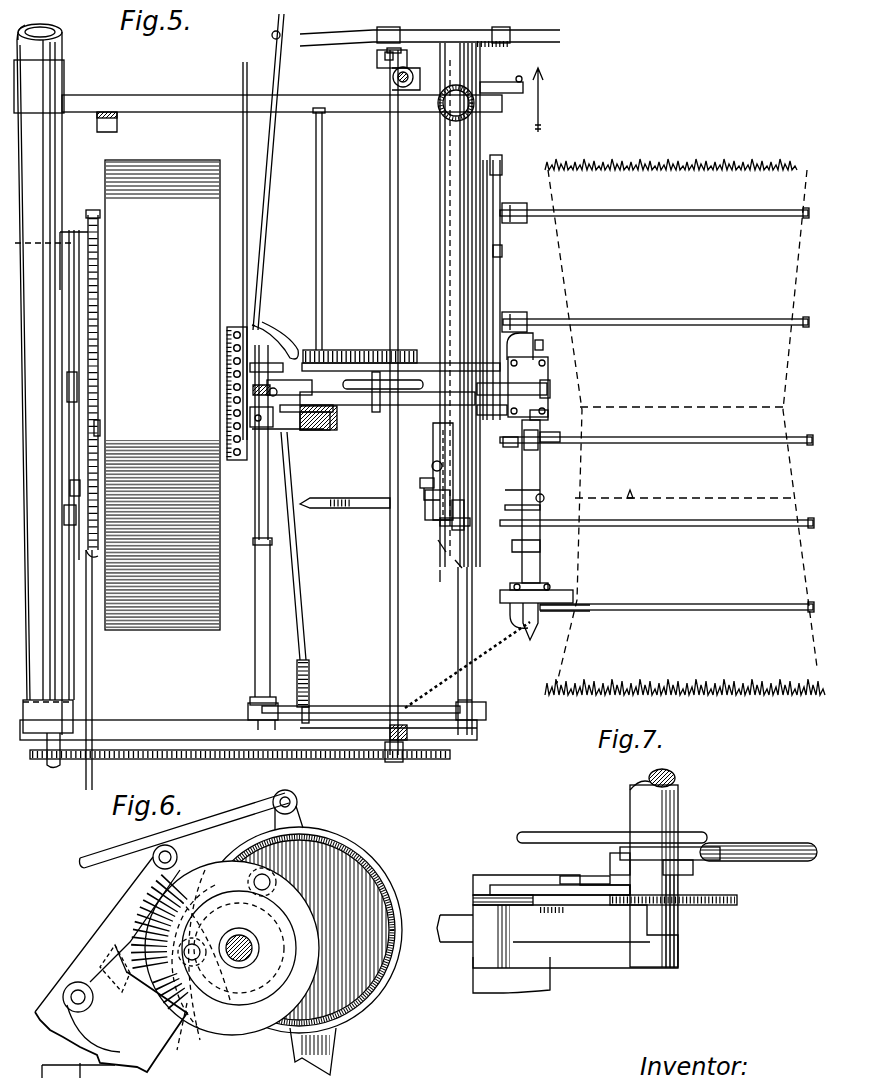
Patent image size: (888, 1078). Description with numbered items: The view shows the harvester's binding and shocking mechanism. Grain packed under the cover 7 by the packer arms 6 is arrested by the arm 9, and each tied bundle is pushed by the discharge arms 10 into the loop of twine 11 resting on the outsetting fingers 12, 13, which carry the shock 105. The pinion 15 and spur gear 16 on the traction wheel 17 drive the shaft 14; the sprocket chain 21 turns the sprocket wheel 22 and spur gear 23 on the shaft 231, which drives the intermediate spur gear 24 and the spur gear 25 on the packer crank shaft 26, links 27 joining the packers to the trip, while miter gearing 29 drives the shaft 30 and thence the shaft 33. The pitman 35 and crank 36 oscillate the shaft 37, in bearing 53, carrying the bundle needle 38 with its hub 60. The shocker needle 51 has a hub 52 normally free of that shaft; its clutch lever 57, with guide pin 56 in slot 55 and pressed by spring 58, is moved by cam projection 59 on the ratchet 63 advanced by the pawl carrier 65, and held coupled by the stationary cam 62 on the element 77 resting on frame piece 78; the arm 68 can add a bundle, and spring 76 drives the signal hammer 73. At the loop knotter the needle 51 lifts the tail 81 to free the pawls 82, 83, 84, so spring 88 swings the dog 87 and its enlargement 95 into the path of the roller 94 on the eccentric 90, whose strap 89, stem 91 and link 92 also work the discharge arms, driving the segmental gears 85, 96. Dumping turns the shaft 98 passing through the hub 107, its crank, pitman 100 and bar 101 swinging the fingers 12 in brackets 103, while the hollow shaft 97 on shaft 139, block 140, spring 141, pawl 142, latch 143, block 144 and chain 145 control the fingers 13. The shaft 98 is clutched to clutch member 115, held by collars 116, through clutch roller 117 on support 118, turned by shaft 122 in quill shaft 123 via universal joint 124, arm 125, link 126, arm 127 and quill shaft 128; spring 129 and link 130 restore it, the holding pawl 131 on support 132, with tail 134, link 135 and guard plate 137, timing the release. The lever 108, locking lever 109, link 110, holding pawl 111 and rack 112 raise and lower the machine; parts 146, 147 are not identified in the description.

In FIG. 5, the packer arms 6 is at (412, 383).
In FIG. 5, the cover 7 is at (150, 100).
In FIG. 5, the arm 9 is at (547, 400).
In FIG. 6, the discharge arms 10 is at (330, 1056).
In FIG. 5, the loop of twine or string 11 is at (710, 497).
In FIG. 5, the fingers 12 is at (672, 210).
In FIG. 5, the fingers 13 is at (672, 437).
In FIG. 5, the shaft 14 is at (70, 240).
In FIG. 5, the pinion 15 is at (99, 228).
In FIG. 5, the spur gear 16 is at (99, 307).
In FIG. 5, the traction wheel 17 is at (163, 168).
In FIG. 5, the sprocket chain 21 is at (195, 773).
In FIG. 5, the sprocket wheel 22 is at (393, 760).
In FIG. 5, the spur gear 23 is at (416, 350).
In FIG. 5, the intermediate spur gear 24 is at (368, 350).
In FIG. 5, the spur gear 25 is at (335, 350).
In FIG. 5, the packer crank shaft 26 is at (330, 432).
In FIG. 5, the links 27 is at (378, 432).
In FIG. 5, the miter gearing 29 is at (383, 65).
In FIG. 5, the shaft 30 is at (393, 78).
In FIG. 6, the shaft 33 is at (259, 951).
In FIG. 7, the shaft 33 is at (672, 778).
In FIG. 5, the pitman 35 is at (395, 30).
In FIG. 5, the crank 36 is at (510, 40).
In FIG. 5, the shaft 37 is at (442, 155).
In FIG. 5, the needle 38 is at (387, 411).
In FIG. 5, the needle 51 is at (348, 508).
In FIG. 5, the elongated hub 52 is at (522, 446).
In FIG. 5, the bearing 53 is at (448, 300).
In FIG. 5, the slot 55 is at (456, 539).
In FIG. 5, the pin 56 is at (437, 462).
In FIG. 5, the clutch lever 57 is at (433, 415).
In FIG. 5, the spring 58 is at (432, 515).
In FIG. 5, the cam projection 59 is at (462, 540).
In FIG. 5, the hub 60 is at (453, 472).
In FIG. 5, the stationary cam 62 is at (417, 483).
In FIG. 5, the ratchet 63 is at (440, 548).
In FIG. 5, the pawl carrier 65 is at (440, 576).
In FIG. 5, the arm 68 is at (540, 548).
In FIG. 5, the hammer 73 is at (540, 500).
In FIG. 5, the spring 76 is at (492, 419).
In FIG. 5, the element 77 is at (513, 464).
In FIG. 5, the frame piece 78 is at (540, 510).
In FIG. 6, the tail 81 is at (107, 1040).
In FIG. 7, the tail 81 is at (548, 981).
In FIG. 6, the pawl 82 is at (97, 970).
In FIG. 7, the pawl 82 is at (505, 884).
In FIG. 6, the pawl 83 is at (125, 908).
In FIG. 7, the pawl 83 is at (548, 889).
In FIG. 6, the pawl 84 is at (127, 983).
In FIG. 7, the pawl 84 is at (566, 878).
In FIG. 6, the segmental gear 85 is at (150, 892).
In FIG. 7, the segmental gear 85 is at (555, 912).
In FIG. 6, the dog 87 is at (232, 1036).
In FIG. 5, the pawl actuating spring 88 is at (547, 415).
In FIG. 6, the pawl actuating spring 88 is at (239, 948).
In FIG. 6, the eccentric strap 89 is at (345, 862).
In FIG. 7, the eccentric strap 89 is at (785, 850).
In FIG. 6, the eccentric 90 is at (350, 878).
In FIG. 6, the stem 91 is at (302, 830).
In FIG. 7, the stem 91 is at (703, 850).
In FIG. 6, the link 92 is at (185, 830).
In FIG. 7, the link 92 is at (575, 836).
In FIG. 6, the roller 94 is at (285, 886).
In FIG. 7, the roller 94 is at (690, 871).
In FIG. 6, the enlargement 95 is at (240, 922).
In FIG. 7, the enlargement 95 is at (622, 856).
In FIG. 6, the segmental gear 96 is at (180, 860).
In FIG. 7, the segmental gear 96 is at (608, 907).
In FIG. 5, the shaft 97 is at (525, 475).
In FIG. 5, the shaft 98 is at (548, 388).
In FIG. 5, the pitman 100 is at (487, 283).
In FIG. 5, the bar 101 is at (502, 250).
In FIG. 5, the brackets 103 is at (520, 225).
In FIG. 5, the shock 105 is at (738, 150).
In FIG. 5, the hub 107 is at (98, 430).
In FIG. 5, the lever 108 is at (93, 663).
In FIG. 5, the locking lever 109 is at (92, 770).
In FIG. 5, the link 110 is at (70, 515).
In FIG. 5, the holding pawl 111 is at (78, 490).
In FIG. 5, the rack 112 is at (100, 556).
In FIG. 5, the clutch member 115 is at (248, 362).
In FIG. 5, the collars 116 is at (72, 387).
In FIG. 5, the clutch roller 117 is at (248, 395).
In FIG. 5, the clutch roller support 118 is at (240, 355).
In FIG. 5, the shaft 122 is at (258, 472).
In FIG. 5, the quill shaft 123 is at (258, 642).
In FIG. 5, the universal joint 124 is at (232, 440).
In FIG. 5, the arm 125 is at (266, 735).
In FIG. 5, the link 126 is at (313, 712).
In FIG. 5, the arm 127 is at (487, 714).
In FIG. 5, the quill shaft 128 is at (472, 690).
In FIG. 5, the spring 129 is at (311, 675).
In FIG. 5, the link 130 is at (303, 547).
In FIG. 5, the holding pawl 131 is at (272, 345).
In FIG. 5, the stationary support 132 is at (243, 305).
In FIG. 5, the elongated tail 134 is at (272, 190).
In FIG. 5, the link 135 is at (245, 412).
In FIG. 5, the guard plate 137 is at (250, 378).
In FIG. 5, the shaft 139 is at (540, 650).
In FIG. 5, the block 140 is at (548, 368).
In FIG. 5, the spring 141 is at (560, 440).
In FIG. 5, the holding pawl 142 is at (515, 620).
In FIG. 5, the latch 143 is at (510, 596).
In FIG. 5, the block 144 is at (548, 588).
In FIG. 5, the chain 145 is at (437, 698).
In FIG. 5, the pipe 146 is at (530, 342).
In FIG. 5, the rod 147 is at (445, 200).
In FIG. 5, the shaft 231 is at (458, 570).